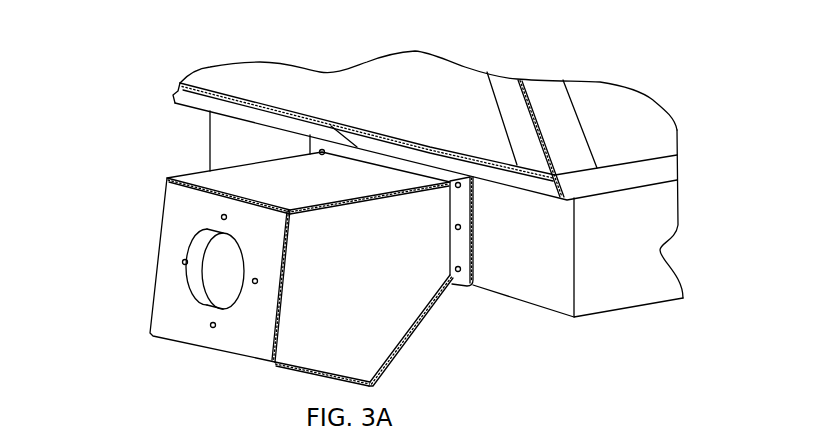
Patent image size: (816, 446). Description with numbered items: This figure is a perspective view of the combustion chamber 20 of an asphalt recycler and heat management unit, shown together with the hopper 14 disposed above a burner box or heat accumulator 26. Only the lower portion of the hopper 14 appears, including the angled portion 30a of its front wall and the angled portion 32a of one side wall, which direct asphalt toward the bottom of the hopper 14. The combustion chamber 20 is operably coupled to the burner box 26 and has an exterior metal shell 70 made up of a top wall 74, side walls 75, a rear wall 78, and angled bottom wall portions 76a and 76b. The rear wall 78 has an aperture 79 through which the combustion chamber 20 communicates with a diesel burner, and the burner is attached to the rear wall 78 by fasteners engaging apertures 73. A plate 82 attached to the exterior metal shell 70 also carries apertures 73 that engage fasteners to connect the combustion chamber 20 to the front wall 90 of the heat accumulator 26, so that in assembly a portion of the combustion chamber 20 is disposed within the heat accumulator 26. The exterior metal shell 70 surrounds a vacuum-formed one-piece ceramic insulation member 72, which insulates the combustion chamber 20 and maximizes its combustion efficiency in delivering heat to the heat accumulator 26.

The hopper 14 is at (146, 85).
The combustion chamber 20 is at (147, 176).
The burner box or heat accumulator 26 is at (630, 287).
The angled portion of front wall 30a is at (423, 114).
The angled portion of side wall 32a is at (633, 123).
The exterior metal shell 70 is at (281, 273).
The vacuum-formed one-piece ceramic insulation member 72 is at (173, 298).
The apertures 73 is at (221, 216).
The top wall 74 is at (303, 186).
The side walls 75 is at (369, 301).
The angled bottom wall portion 76a is at (295, 374).
The angled bottom wall portion 76b is at (407, 340).
The rear wall 78 is at (195, 218).
The aperture 79 is at (226, 283).
The plate 82 is at (467, 252).
The front wall of heat accumulator 90 is at (549, 281).